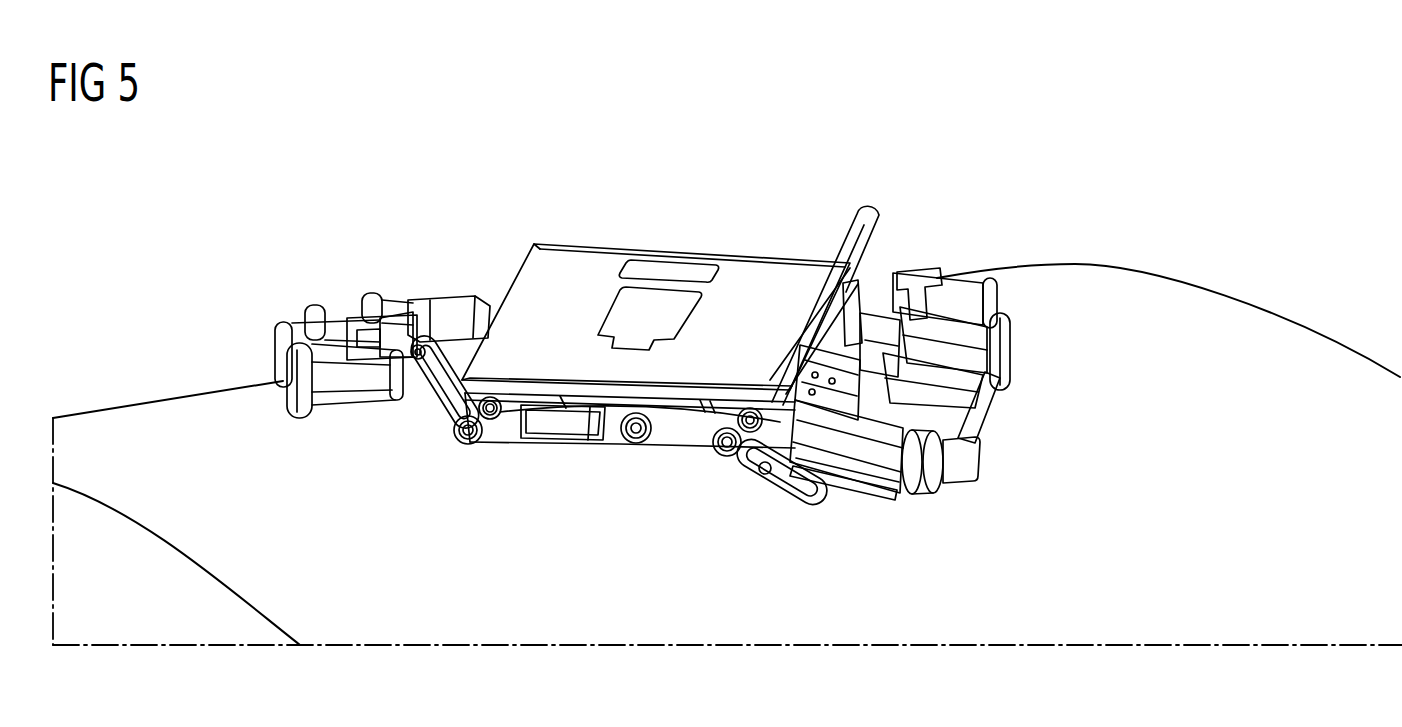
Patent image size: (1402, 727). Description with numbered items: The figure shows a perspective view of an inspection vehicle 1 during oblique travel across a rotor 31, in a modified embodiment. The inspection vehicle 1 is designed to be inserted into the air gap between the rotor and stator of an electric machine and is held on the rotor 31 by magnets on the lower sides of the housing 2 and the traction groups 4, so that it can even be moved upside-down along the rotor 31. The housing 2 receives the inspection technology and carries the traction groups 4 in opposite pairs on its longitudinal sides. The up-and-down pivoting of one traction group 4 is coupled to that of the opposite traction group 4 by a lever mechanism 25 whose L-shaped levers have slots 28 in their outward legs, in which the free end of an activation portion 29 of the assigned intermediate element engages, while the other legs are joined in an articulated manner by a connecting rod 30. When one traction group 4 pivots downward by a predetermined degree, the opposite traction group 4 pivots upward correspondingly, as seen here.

The inspection vehicle 1 is at (642, 394).
The housing 2 is at (771, 262).
The traction group 4 is at (453, 280).
The lever mechanism 25 is at (678, 440).
The slot 28 is at (411, 398).
The activation portion 29 is at (406, 348).
The connecting rod 30 is at (516, 406).
The rotor 31 is at (148, 416).